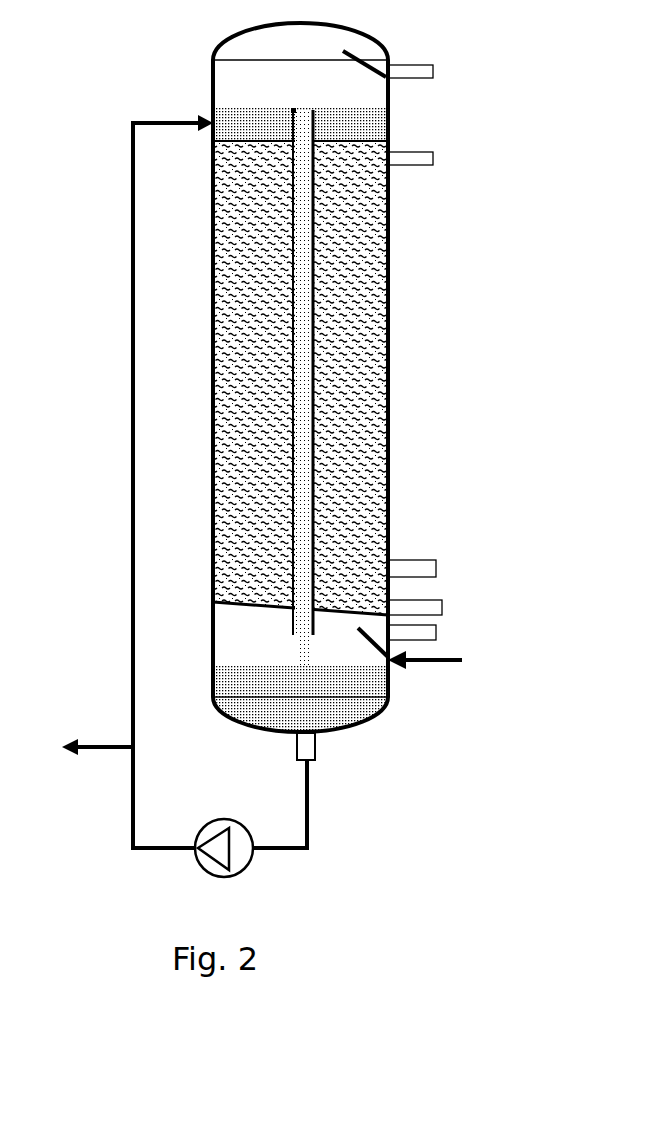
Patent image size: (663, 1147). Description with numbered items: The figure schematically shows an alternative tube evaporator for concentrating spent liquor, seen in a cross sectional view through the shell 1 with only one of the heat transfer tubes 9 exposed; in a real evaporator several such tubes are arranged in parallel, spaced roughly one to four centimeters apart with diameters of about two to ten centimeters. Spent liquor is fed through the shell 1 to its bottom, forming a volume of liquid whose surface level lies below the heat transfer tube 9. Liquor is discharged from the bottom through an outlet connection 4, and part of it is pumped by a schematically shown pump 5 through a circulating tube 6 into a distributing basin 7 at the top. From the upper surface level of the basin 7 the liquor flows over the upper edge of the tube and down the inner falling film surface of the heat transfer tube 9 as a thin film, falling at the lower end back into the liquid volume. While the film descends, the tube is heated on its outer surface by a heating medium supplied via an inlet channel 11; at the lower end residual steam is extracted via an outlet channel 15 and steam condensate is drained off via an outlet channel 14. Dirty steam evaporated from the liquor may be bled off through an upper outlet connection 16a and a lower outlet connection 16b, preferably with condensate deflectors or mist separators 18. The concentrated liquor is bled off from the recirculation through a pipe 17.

The shell 1 is at (388, 238).
The outlet connection 4 is at (305, 748).
The pump 5 is at (215, 821).
The circulating tube 6 is at (133, 433).
The distributing basin 7 is at (245, 123).
The heat transfer tube 9 is at (315, 323).
The inlet channel 11 is at (433, 158).
The outlet channel 14 is at (442, 607).
The outlet channel 15 is at (436, 569).
The upper outlet connection 16a is at (433, 71).
The lower outlet connection 16b is at (436, 632).
The pipe 17 is at (103, 746).
The condensate deflector/mist separator 18 is at (358, 54).